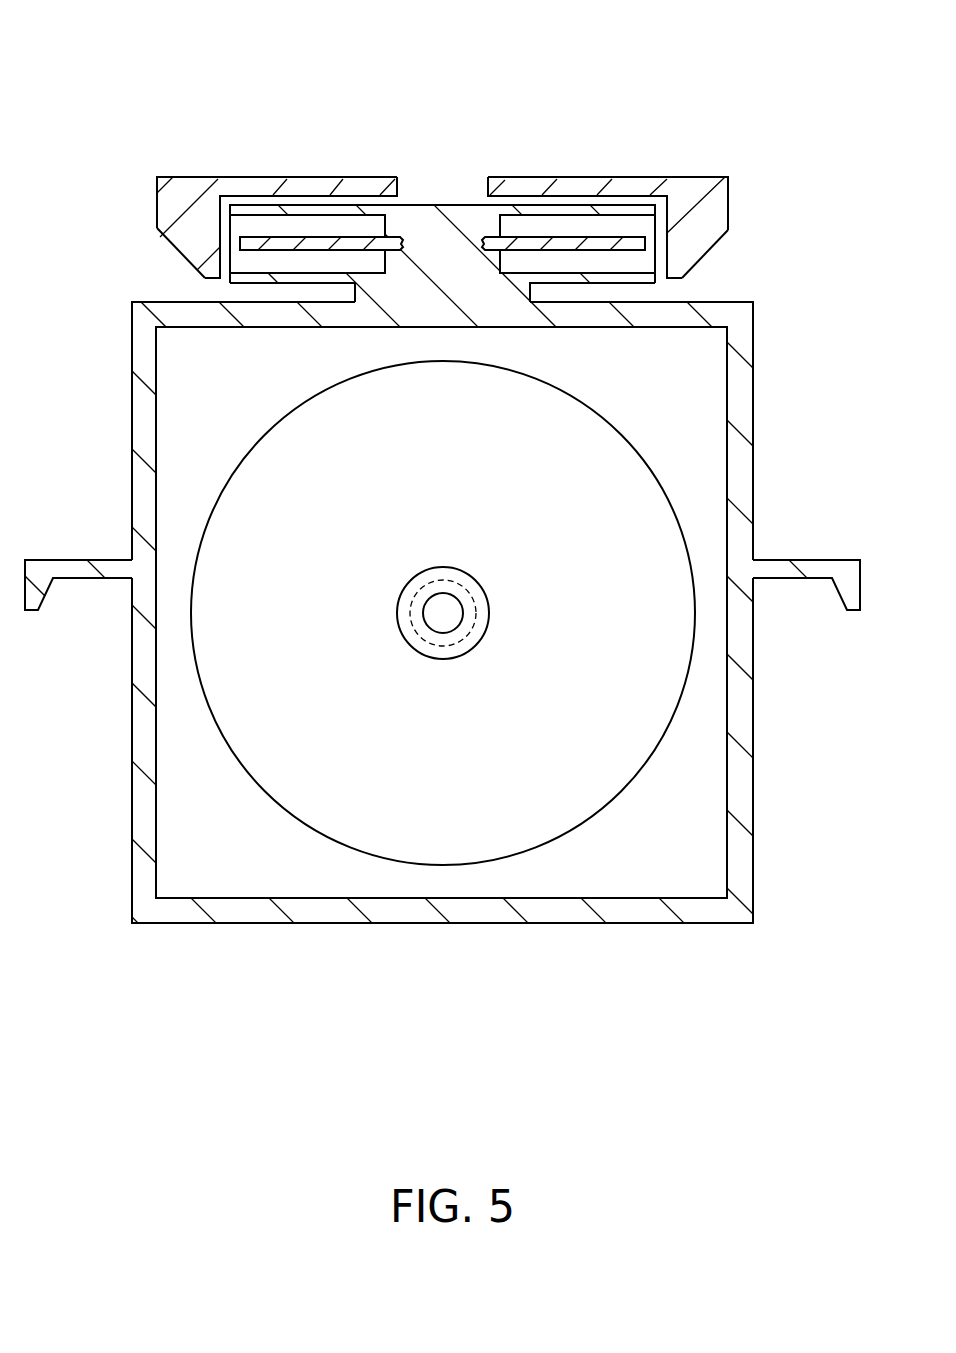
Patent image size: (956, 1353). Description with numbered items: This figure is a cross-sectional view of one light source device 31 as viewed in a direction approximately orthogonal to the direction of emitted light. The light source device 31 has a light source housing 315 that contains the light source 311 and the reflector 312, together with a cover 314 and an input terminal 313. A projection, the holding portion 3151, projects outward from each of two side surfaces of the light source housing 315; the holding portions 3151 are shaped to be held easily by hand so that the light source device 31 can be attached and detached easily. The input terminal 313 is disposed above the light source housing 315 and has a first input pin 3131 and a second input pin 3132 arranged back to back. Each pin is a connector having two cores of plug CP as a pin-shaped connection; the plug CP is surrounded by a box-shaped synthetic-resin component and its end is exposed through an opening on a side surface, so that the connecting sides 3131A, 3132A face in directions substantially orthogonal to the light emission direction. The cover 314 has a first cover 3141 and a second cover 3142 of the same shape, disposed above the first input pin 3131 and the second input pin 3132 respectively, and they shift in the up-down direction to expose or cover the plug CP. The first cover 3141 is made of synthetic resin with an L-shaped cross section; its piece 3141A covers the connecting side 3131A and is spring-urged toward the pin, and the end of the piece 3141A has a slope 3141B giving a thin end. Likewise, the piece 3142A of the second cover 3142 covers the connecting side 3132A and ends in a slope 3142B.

The light source device 31 is at (760, 94).
The light source 311 is at (480, 625).
The reflector 312 is at (648, 690).
The input terminal 313 is at (523, 123).
The first input pin 3131 is at (533, 227).
The connecting side 3131A is at (658, 218).
The second input pin 3132 is at (352, 227).
The connecting side 3132A is at (228, 222).
The plug CP is at (321, 243).
The cover 314 is at (450, 201).
The first cover 3141 is at (675, 201).
The piece 3141A is at (718, 200).
The slope 3141B is at (717, 244).
The second cover 3142 is at (217, 201).
The piece 3142A is at (173, 203).
The slope 3142B is at (163, 237).
The light source housing 315 is at (745, 390).
The holding portion 3151 is at (70, 570).